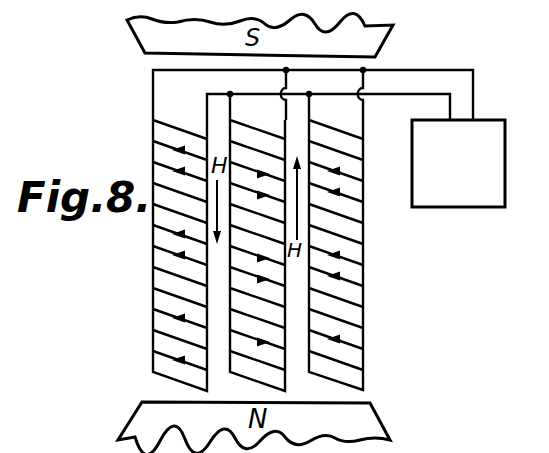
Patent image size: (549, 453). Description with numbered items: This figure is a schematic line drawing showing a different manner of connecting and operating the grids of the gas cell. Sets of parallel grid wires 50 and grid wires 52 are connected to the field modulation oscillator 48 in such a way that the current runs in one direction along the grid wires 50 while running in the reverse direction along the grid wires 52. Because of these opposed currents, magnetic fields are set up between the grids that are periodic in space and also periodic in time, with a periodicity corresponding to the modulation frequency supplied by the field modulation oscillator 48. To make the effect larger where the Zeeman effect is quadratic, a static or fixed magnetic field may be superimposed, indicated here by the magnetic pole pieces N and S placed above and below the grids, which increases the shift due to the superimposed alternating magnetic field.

The field modulation oscillator 48 is at (522, 111).
The grid wires 50 is at (157, 370).
The grid wires 52 is at (259, 377).